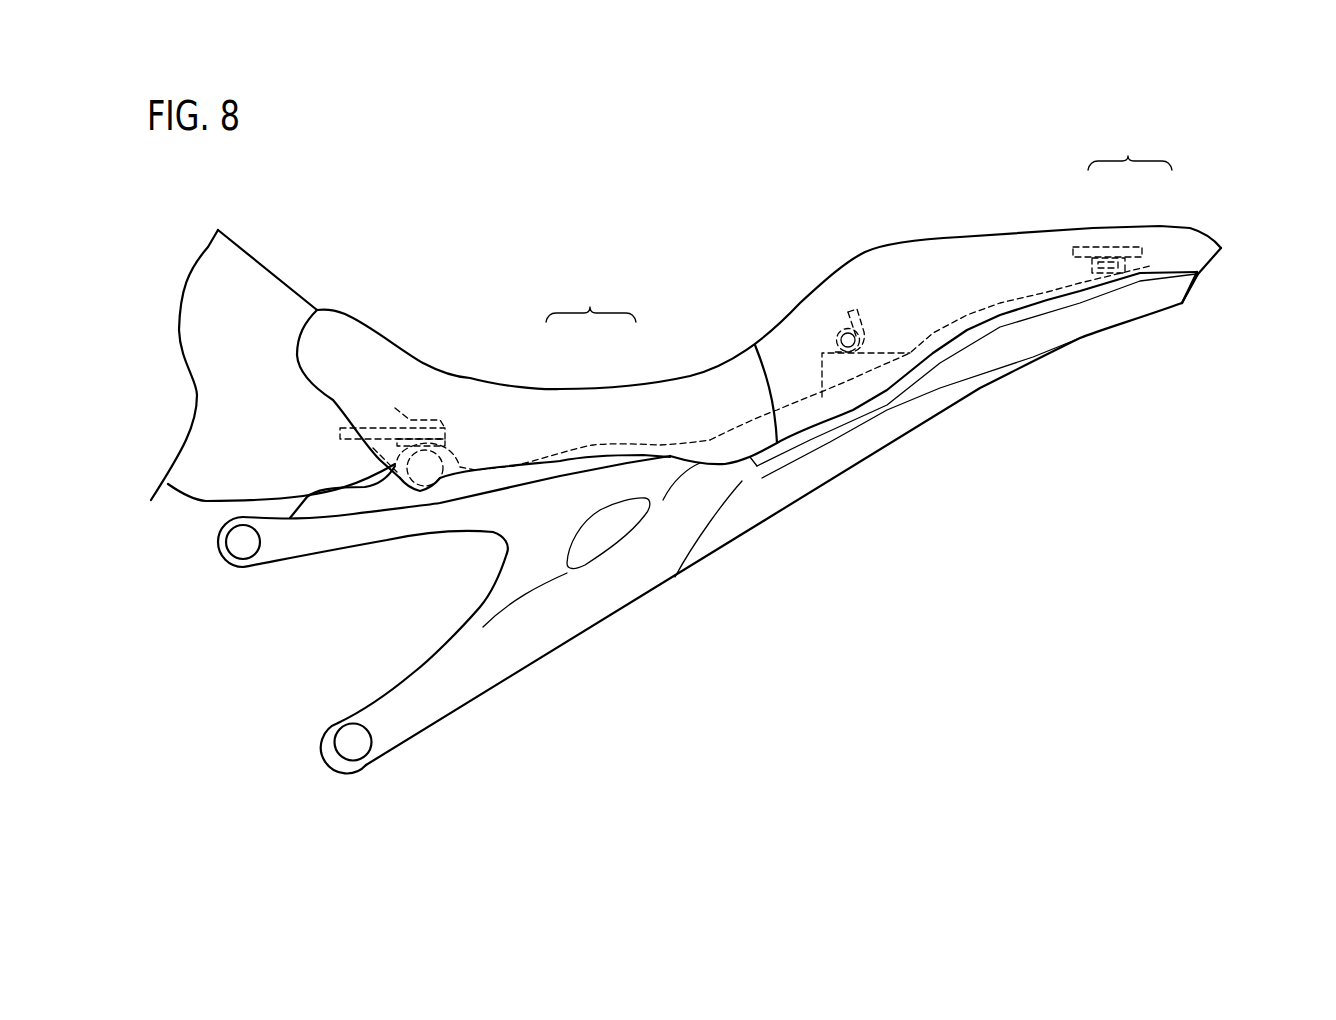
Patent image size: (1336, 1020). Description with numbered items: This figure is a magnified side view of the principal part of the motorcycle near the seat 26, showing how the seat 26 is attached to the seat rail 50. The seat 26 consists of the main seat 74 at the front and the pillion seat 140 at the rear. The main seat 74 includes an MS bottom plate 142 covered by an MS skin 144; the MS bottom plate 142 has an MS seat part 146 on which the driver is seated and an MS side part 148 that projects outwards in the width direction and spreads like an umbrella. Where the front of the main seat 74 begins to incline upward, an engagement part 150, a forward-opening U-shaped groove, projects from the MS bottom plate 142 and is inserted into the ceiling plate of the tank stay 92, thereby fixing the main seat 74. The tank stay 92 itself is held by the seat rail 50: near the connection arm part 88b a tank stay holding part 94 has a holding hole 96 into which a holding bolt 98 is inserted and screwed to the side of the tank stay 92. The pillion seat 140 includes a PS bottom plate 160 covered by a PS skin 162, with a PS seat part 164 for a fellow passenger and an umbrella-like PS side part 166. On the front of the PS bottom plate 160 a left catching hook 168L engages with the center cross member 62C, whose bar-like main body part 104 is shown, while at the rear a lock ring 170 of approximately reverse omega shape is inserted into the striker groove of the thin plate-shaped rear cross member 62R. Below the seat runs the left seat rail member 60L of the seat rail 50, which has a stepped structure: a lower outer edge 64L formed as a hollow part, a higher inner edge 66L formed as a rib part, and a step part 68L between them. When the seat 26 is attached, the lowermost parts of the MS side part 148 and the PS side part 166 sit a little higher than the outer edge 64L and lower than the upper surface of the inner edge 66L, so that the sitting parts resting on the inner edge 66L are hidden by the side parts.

The seat 26 is at (1199, 223).
The seat rail 50 is at (700, 538).
The left seat rail member 60L is at (845, 466).
The rear cross member 62R is at (1142, 258).
The center cross member 62C is at (837, 333).
The outer edge 64L is at (960, 357).
The inner edge 66L is at (757, 412).
The step part 68L is at (884, 400).
The main seat 74 is at (358, 311).
The connection arm part 88b is at (324, 530).
The tank stay 92 is at (340, 434).
The tank stay holding part 94 is at (400, 467).
The holding hole 96 is at (426, 491).
The holding bolt 98 is at (412, 530).
The main body part 104 is at (790, 302).
The pillion seat 140 is at (901, 241).
The MS bottom plate 142 is at (591, 304).
The MS skin 144 is at (683, 390).
The MS seat part 146 is at (620, 403).
The MS side part 148 is at (566, 437).
The engagement part 150 is at (427, 438).
The PS bottom plate 160 is at (1123, 248).
The PS skin 162 is at (967, 235).
The PS seat part 164 is at (1093, 245).
The PS side part 166 is at (1131, 267).
The left catching hook 168L is at (855, 308).
The lock ring 170 is at (1106, 275).